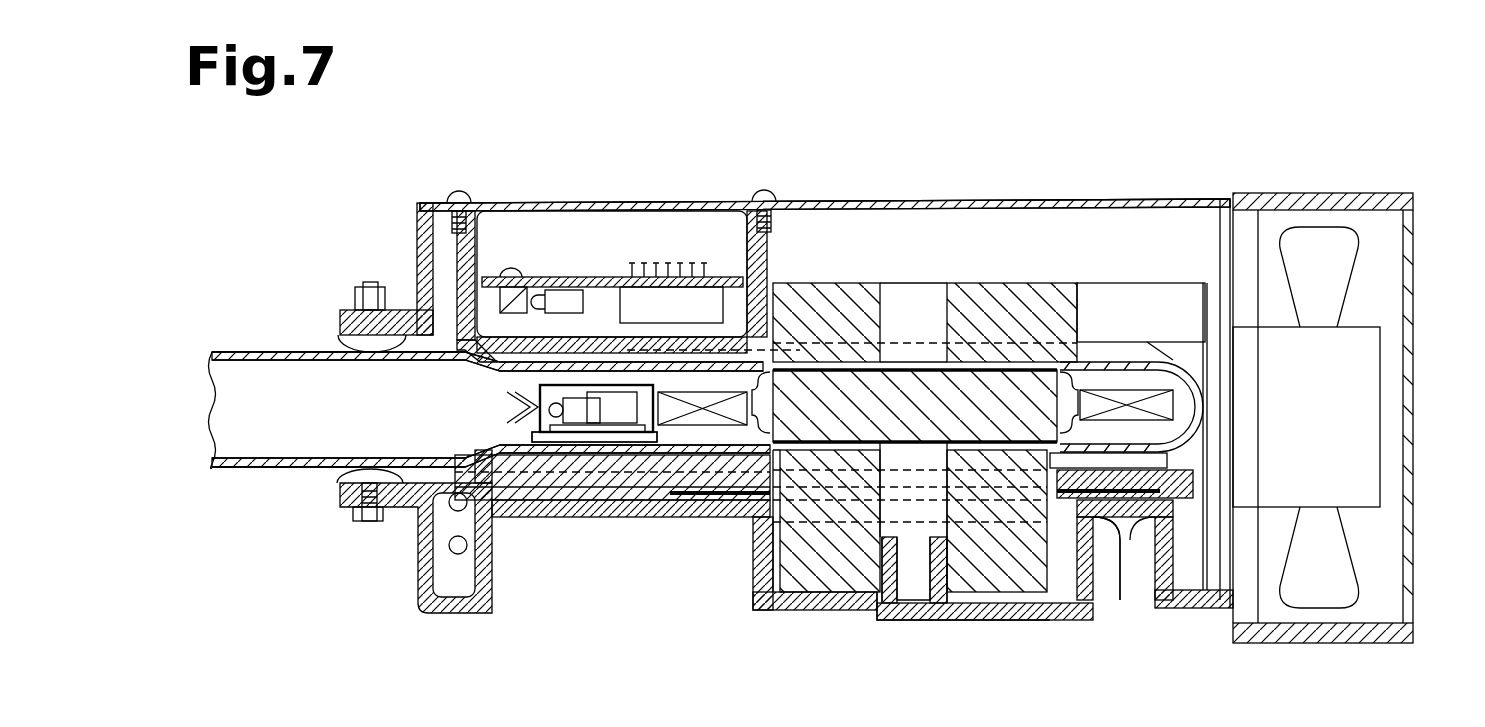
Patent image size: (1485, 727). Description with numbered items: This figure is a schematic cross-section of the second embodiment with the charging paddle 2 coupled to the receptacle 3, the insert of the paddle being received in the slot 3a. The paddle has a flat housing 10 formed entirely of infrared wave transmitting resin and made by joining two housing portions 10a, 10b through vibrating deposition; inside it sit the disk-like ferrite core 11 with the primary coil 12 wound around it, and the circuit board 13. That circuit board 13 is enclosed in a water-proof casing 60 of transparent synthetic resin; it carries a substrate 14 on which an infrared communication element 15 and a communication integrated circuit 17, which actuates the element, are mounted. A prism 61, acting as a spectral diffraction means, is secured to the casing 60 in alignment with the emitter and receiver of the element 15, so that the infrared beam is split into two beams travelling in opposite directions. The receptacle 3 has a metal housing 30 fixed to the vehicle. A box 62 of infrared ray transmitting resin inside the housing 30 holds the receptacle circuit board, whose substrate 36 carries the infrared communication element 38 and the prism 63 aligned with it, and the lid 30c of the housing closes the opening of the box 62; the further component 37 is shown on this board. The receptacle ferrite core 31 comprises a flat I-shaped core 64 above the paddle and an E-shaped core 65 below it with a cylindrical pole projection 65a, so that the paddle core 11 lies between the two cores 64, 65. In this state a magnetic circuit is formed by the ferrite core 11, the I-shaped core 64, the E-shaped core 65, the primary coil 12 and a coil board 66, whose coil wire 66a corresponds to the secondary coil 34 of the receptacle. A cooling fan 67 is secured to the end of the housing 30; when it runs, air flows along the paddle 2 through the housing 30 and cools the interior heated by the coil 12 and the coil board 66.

The charging paddle 2 is at (248, 349).
The receptacle 3 is at (1172, 199).
The slot 3a is at (340, 485).
The housing 10 is at (285, 468).
The housing portion 10a is at (225, 470).
The housing portion 10b is at (288, 352).
The ferrite core 11 is at (900, 432).
The primary coil 12 is at (1175, 428).
The circuit board 13 is at (595, 425).
The substrate 14 is at (562, 435).
The infrared communication element 15 is at (576, 420).
The communication integrated circuit 17 is at (625, 415).
The housing 30 is at (752, 592).
The lid 30c is at (922, 201).
The ferrite core 31 is at (832, 600).
The secondary coil 34 is at (1121, 597).
The substrate 36 is at (607, 280).
The connector 37 is at (728, 287).
The infrared communication element 38 is at (568, 296).
The water-proof casing 60 is at (540, 378).
The prism 61 is at (508, 408).
The box 62 is at (475, 236).
The prism 63 is at (500, 270).
The I-shaped core 64 is at (1020, 300).
The E-shaped core 65 is at (1003, 594).
The pole projection 65a is at (800, 492).
The coil board 66 is at (655, 494).
The coil wire 66a is at (1115, 518).
The cooling fan 67 is at (1380, 350).